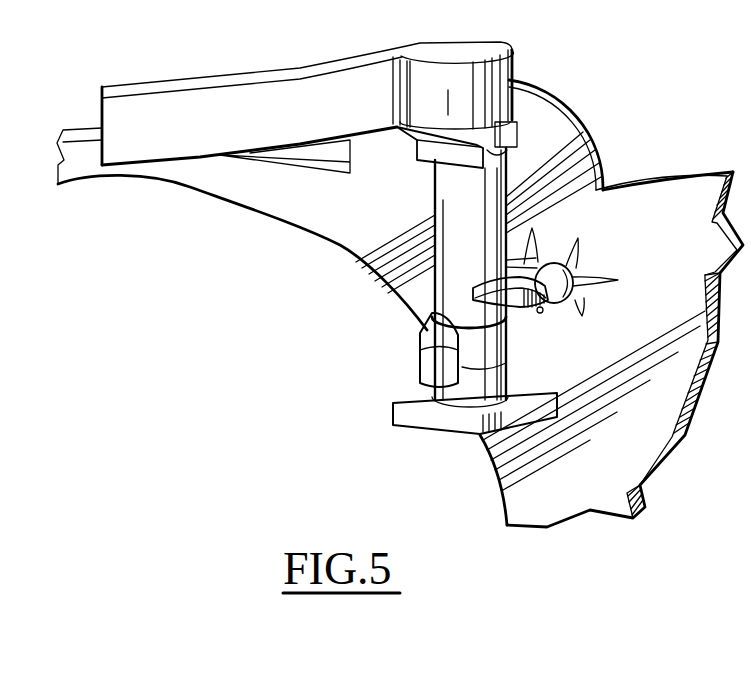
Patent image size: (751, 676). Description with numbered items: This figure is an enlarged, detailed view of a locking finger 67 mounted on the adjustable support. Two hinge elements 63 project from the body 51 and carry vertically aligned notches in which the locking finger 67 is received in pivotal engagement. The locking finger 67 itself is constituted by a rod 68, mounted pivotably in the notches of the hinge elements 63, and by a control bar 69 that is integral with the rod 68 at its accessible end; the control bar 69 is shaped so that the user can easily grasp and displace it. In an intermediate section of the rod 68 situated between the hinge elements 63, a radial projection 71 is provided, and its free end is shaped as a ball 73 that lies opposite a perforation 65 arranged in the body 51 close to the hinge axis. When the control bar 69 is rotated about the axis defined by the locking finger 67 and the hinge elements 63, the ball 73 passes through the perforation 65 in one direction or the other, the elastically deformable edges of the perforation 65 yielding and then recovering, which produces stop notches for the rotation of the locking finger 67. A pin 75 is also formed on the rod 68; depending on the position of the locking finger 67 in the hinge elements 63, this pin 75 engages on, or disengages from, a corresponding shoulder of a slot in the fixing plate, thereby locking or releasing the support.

The body 51 is at (563, 112).
The hinge elements 63 is at (447, 153).
The perforation 65 is at (588, 283).
The locking finger 67 is at (478, 215).
The rod 68 is at (447, 296).
The control bar 69 is at (188, 120).
The radial projection 71 is at (510, 317).
The ball 73 is at (555, 278).
The pin 75 is at (430, 367).